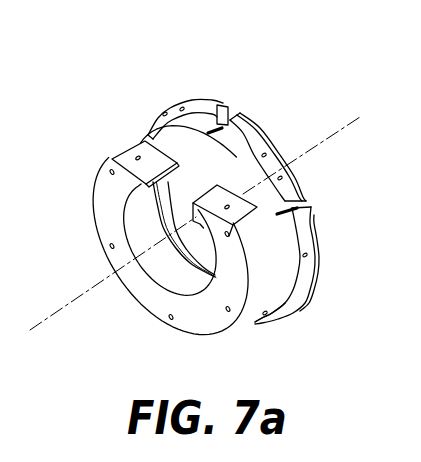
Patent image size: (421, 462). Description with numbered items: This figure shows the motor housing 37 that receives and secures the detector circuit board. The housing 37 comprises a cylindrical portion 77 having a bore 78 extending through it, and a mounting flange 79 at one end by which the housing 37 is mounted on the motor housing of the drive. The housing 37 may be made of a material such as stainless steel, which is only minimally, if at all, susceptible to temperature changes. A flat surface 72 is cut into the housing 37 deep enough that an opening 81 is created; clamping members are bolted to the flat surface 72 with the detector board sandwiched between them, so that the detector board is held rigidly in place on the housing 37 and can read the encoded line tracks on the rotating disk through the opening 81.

The housing 37 is at (312, 225).
The flat surface 72 is at (125, 157).
The cylindrical portion 77 is at (257, 283).
The bore 78 is at (140, 213).
The mounting flange 79 is at (188, 100).
The opening 81 is at (187, 187).